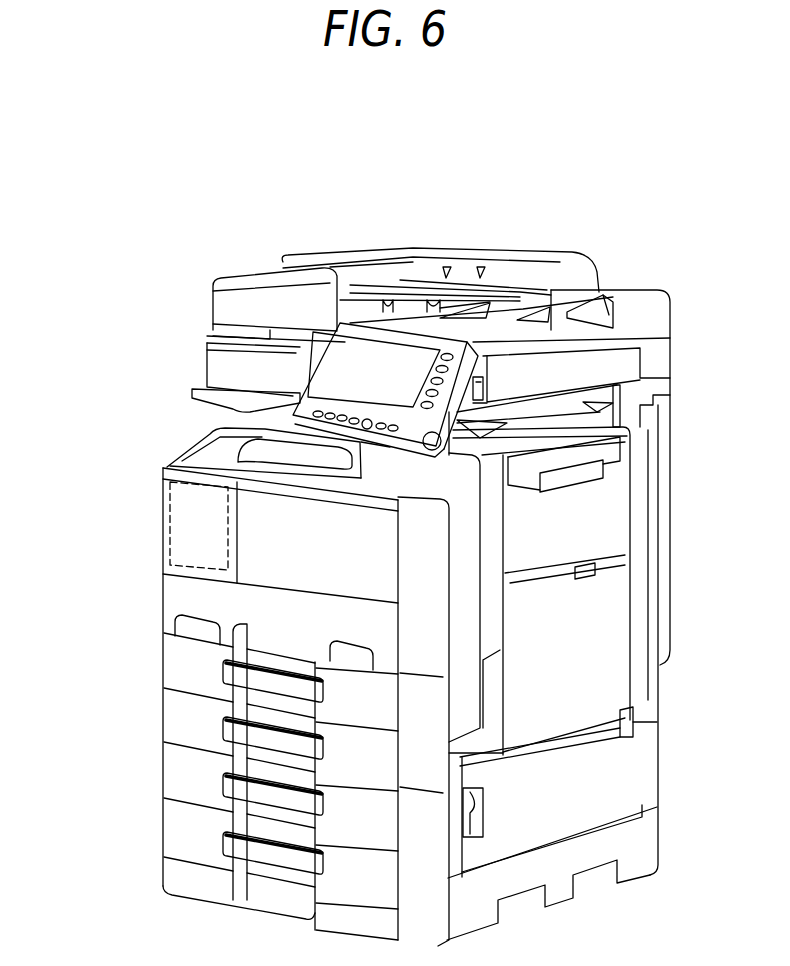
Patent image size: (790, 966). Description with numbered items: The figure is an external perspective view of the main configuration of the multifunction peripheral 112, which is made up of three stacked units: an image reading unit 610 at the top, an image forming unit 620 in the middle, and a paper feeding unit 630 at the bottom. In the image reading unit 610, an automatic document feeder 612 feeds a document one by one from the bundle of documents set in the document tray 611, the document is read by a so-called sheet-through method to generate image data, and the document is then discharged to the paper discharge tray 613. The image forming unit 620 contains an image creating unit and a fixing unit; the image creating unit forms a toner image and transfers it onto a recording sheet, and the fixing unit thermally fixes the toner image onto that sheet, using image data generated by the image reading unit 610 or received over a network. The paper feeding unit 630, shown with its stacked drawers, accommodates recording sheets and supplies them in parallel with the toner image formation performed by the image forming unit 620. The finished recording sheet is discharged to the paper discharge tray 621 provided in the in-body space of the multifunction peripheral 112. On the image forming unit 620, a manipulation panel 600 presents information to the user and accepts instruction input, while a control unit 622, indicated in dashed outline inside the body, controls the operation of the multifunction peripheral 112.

The multifunction peripheral 112 is at (474, 151).
The manipulation panel 600 is at (363, 352).
The image reading unit 610 is at (127, 247).
The document tray 611 is at (511, 252).
The automatic document feeder 612 is at (238, 279).
The paper discharge tray 613 is at (607, 290).
The image forming unit 620 is at (127, 388).
The paper discharge tray 621 is at (210, 433).
The control unit 622 is at (170, 504).
The paper feeding unit 630 is at (127, 586).